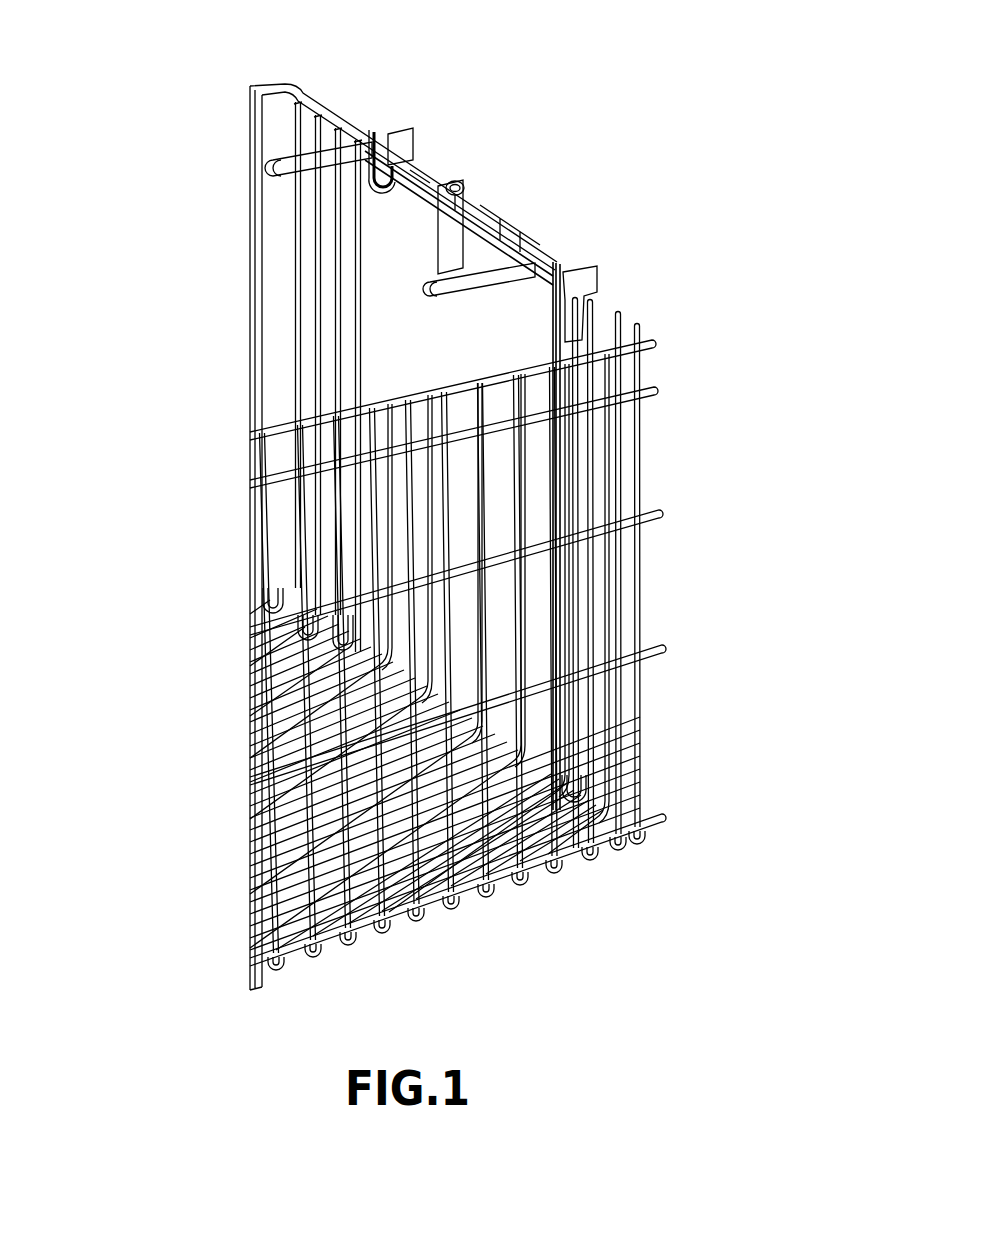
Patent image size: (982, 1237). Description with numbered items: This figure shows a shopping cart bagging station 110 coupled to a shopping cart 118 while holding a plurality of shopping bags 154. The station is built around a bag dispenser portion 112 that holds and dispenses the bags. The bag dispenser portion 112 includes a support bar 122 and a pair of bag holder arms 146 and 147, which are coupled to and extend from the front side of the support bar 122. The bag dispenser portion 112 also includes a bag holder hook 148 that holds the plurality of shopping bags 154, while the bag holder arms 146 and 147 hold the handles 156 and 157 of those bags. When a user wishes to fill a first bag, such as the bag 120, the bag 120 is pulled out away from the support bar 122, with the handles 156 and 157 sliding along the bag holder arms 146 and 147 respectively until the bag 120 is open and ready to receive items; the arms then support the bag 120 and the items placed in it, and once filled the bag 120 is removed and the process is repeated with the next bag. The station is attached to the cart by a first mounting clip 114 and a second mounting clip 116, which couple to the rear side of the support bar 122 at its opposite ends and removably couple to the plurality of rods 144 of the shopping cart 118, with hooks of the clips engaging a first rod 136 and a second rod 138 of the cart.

The shopping cart bagging station 110 is at (462, 142).
The bag dispenser portion 112 is at (243, 158).
The first mounting clip 114 is at (403, 137).
The second mounting clip 116 is at (590, 280).
The shopping cart 118 is at (567, 680).
The bag 120 is at (395, 375).
The support bar 122 is at (500, 237).
The first rod 136 is at (660, 343).
The second rod 138 is at (658, 399).
The plurality of rods 144 is at (246, 709).
The bag holder arm 146 is at (284, 165).
The bag holder arm 147 is at (440, 292).
The bag holder hook 148 is at (466, 189).
The plurality of shopping bags 154 is at (377, 277).
The handle 156 is at (362, 137).
The handle 157 is at (660, 389).